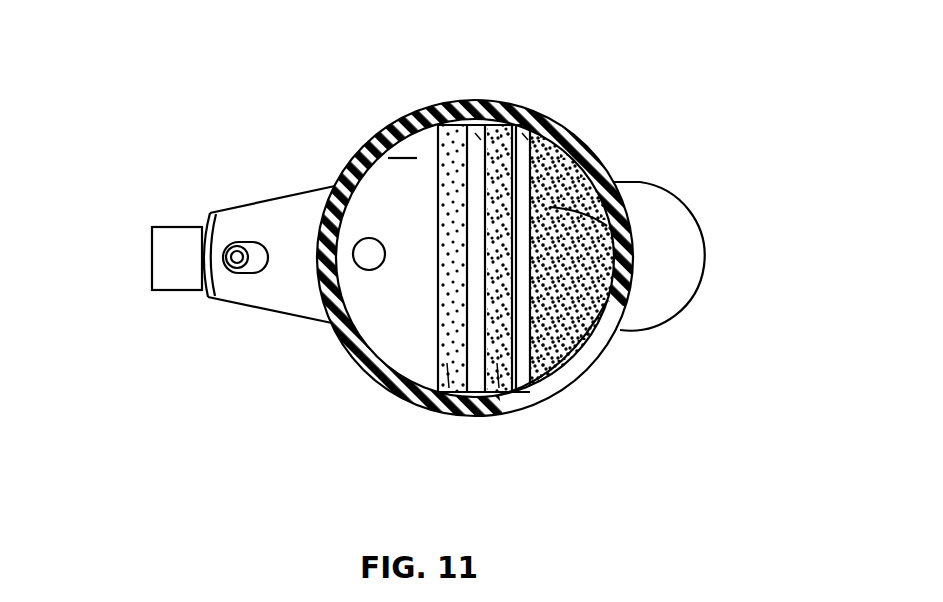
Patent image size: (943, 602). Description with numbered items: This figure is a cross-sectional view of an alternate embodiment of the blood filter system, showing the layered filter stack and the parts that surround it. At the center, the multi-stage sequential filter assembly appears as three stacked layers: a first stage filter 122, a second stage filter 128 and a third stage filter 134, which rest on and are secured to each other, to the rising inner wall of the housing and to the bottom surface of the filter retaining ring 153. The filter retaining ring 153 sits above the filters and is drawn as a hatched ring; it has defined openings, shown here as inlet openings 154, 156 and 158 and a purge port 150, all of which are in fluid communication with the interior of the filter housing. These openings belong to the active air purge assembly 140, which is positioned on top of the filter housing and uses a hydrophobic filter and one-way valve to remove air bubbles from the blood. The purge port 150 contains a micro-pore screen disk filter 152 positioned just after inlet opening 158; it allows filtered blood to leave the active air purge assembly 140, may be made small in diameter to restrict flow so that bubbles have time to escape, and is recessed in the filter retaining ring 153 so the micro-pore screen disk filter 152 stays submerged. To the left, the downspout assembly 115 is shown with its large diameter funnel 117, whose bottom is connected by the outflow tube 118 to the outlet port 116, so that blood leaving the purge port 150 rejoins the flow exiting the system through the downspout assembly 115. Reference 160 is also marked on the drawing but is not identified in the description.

The downspout assembly 115 is at (200, 203).
The outlet port 116 is at (150, 258).
The large diameter funnel 117 is at (277, 312).
The outflow tube 118 is at (182, 292).
The first stage filter 122 is at (640, 182).
The second stage filter 128 is at (482, 413).
The third stage filter 134 is at (445, 410).
The active air purge assembly 140 is at (352, 148).
The purge port 150 is at (368, 271).
The micro-pore screen disk filter 152 is at (368, 238).
The filter retaining ring 153 is at (550, 110).
The inlet opening 154 is at (566, 125).
The inlet opening 156 is at (485, 183).
The inlet opening 158 is at (435, 347).
The indicator 160 is at (235, 243).